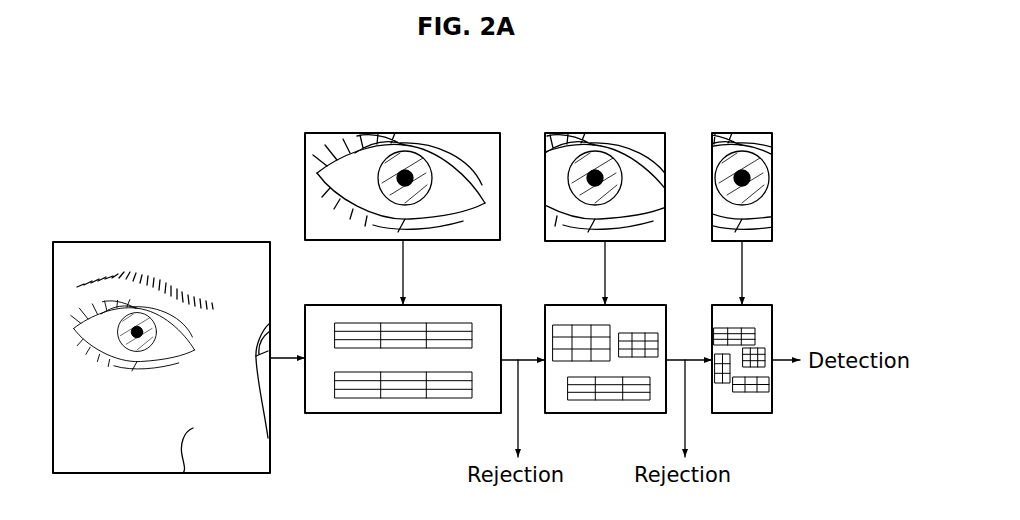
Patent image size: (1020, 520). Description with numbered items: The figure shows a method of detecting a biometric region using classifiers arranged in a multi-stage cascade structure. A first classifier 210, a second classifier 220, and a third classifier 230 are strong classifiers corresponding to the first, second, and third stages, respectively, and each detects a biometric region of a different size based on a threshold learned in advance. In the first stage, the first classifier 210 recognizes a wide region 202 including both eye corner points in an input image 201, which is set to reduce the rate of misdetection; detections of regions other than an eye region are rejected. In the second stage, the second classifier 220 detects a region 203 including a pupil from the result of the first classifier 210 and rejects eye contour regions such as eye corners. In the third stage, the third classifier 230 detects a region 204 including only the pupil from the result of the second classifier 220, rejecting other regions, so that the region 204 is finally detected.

The input image 201 is at (178, 242).
The region including both eye corner points 202 is at (420, 133).
The region including a pupil 203 is at (620, 133).
The region including only the pupil 204 is at (763, 133).
The first classifier 210 is at (420, 305).
The second classifier 220 is at (621, 305).
The third classifier 230 is at (760, 305).